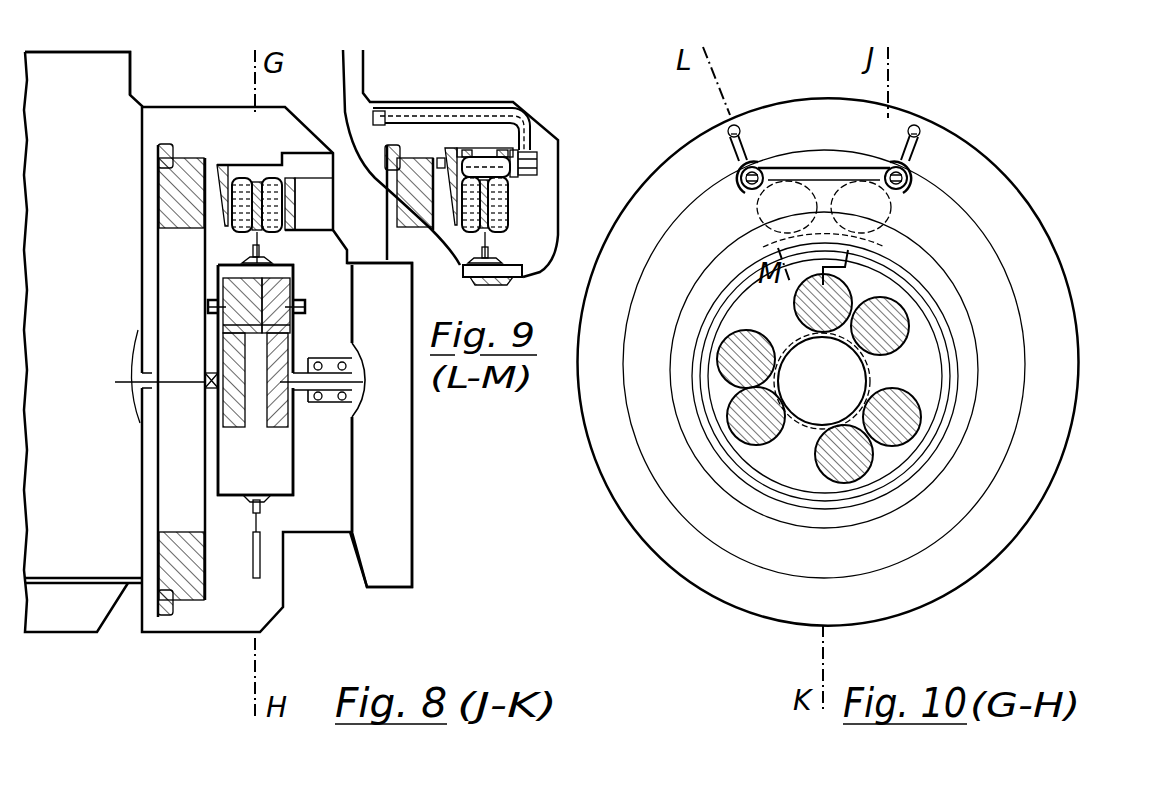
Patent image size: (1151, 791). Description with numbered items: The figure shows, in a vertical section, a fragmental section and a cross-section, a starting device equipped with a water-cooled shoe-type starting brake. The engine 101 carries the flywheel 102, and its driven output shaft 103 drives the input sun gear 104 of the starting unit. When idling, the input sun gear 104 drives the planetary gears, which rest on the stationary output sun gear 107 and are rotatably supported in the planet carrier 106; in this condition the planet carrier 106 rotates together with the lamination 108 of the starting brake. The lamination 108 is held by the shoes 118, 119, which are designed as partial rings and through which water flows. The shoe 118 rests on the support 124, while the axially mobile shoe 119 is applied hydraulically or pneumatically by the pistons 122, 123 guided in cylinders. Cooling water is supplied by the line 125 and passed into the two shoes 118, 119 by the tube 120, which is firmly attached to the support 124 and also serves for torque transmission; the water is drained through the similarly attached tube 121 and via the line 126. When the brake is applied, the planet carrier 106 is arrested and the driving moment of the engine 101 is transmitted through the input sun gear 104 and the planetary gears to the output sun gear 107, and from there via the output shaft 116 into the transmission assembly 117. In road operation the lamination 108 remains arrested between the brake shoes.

In FIG. 8, the engine 101 is at (100, 113).
In FIG. 8, the flywheel 102 is at (182, 195).
In FIG. 8, the driven output shaft 103 is at (178, 376).
In FIG. 8, the input sun gear 104 is at (227, 400).
In FIG. 8, the planet carrier 106 is at (218, 277).
In FIG. 10, the planet carrier 106 is at (880, 460).
In FIG. 8, the output sun gear 107 is at (277, 412).
In FIG. 9, the output sun gear 107 is at (485, 247).
In FIG. 10, the output sun gear 107 is at (853, 362).
In FIG. 8, the lamination 108 is at (253, 552).
In FIG. 10, the lamination 108 is at (707, 510).
In FIG. 8, the output shaft 116 is at (300, 395).
In FIG. 8, the transmission assembly 117 is at (387, 535).
In FIG. 8, the shoe 118 is at (233, 230).
In FIG. 9, the shoe 118 is at (470, 230).
In FIG. 8, the shoe 119 is at (267, 177).
In FIG. 9, the shoe 119 is at (498, 204).
In FIG. 10, the shoe 119 is at (757, 212).
In FIG. 9, the tube 120 is at (484, 147).
In FIG. 10, the tube 120 is at (733, 165).
In FIG. 10, the tube 121 is at (910, 177).
In FIG. 10, the piston 122 is at (803, 193).
In FIG. 8, the piston 123 is at (302, 180).
In FIG. 10, the piston 123 is at (895, 225).
In FIG. 8, the support 124 is at (240, 163).
In FIG. 9, the support 124 is at (470, 150).
In FIG. 10, the support 124 is at (843, 158).
In FIG. 9, the line 125 is at (526, 120).
In FIG. 10, the line 125 is at (733, 145).
In FIG. 10, the line 126 is at (913, 140).